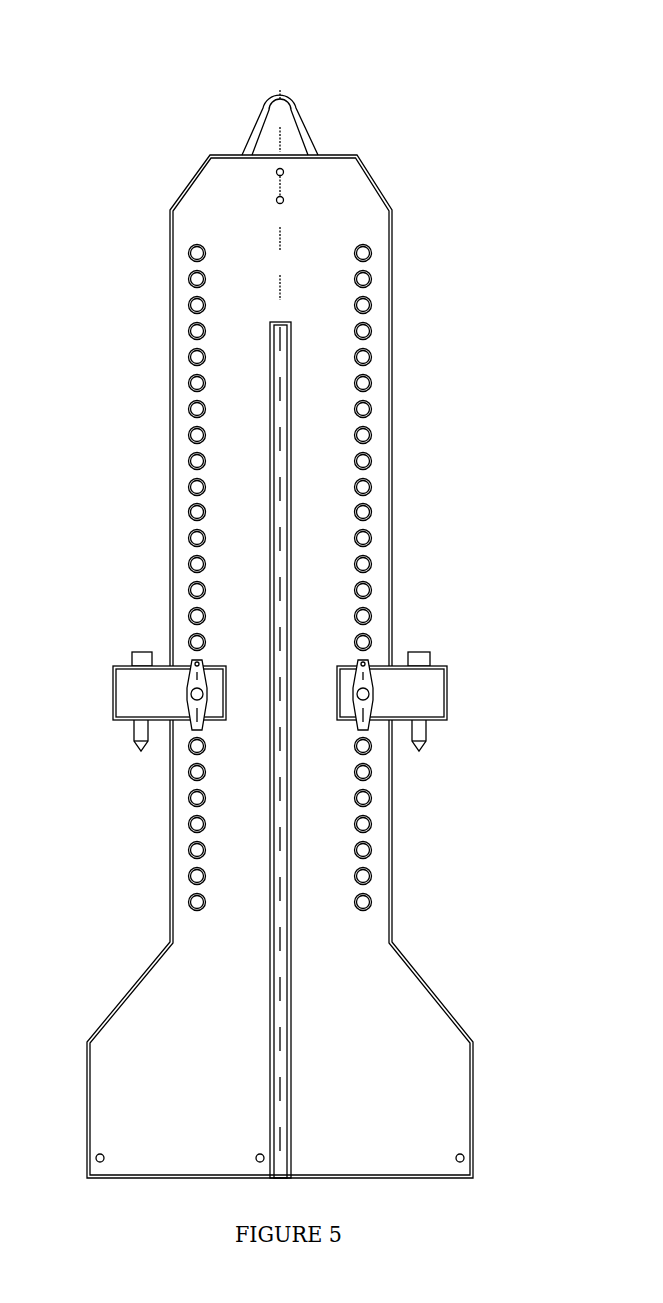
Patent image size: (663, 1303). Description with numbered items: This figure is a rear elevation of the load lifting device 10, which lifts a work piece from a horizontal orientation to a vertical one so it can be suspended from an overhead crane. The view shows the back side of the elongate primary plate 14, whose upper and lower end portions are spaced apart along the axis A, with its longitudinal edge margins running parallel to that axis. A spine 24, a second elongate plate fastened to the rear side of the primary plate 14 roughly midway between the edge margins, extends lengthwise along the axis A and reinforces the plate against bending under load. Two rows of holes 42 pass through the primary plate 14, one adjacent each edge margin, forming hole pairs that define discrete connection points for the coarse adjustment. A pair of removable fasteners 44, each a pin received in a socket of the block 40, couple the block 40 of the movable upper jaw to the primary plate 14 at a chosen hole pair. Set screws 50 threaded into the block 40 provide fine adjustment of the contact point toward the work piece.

The load lifting device 10 is at (345, 592).
The primary plate 14 is at (335, 207).
The axis A is at (279, 442).
The spine 24 is at (287, 1003).
The holes 42 is at (197, 331).
The block 40 is at (427, 691).
The removable fasteners 44 is at (193, 692).
The set screws 50 is at (138, 732).